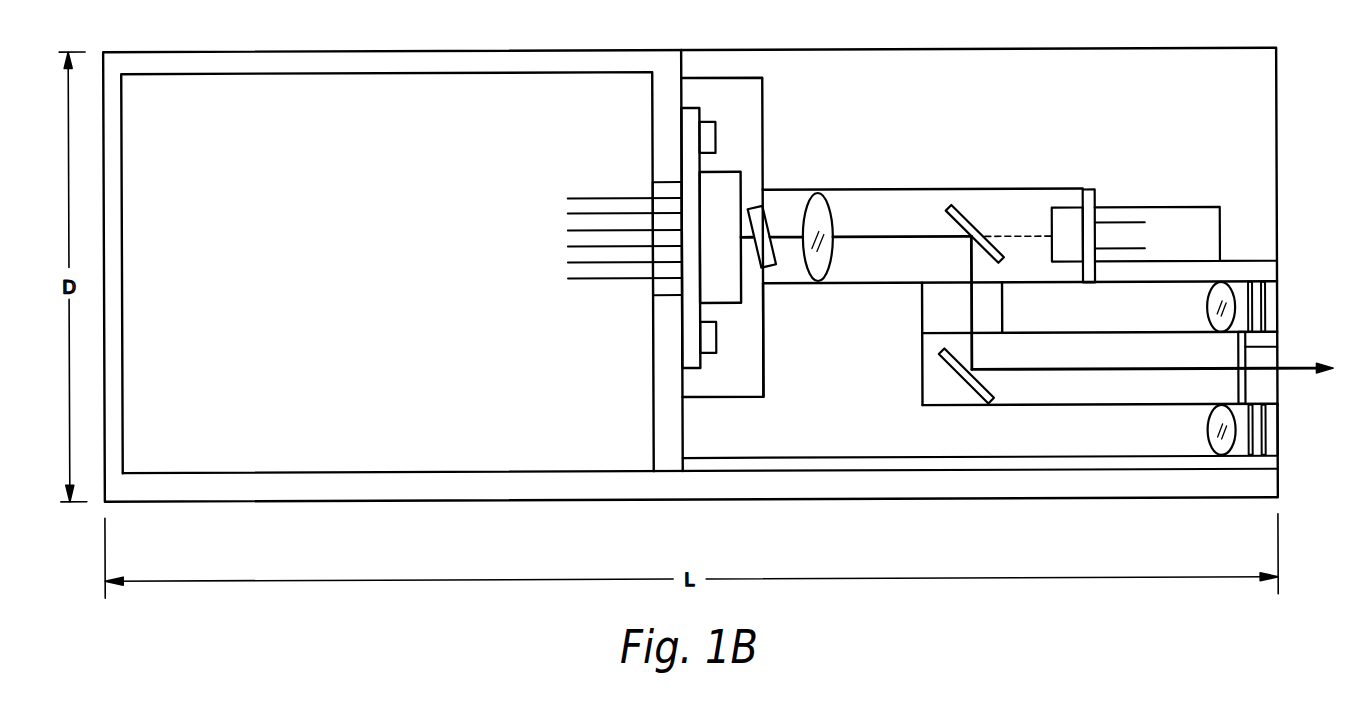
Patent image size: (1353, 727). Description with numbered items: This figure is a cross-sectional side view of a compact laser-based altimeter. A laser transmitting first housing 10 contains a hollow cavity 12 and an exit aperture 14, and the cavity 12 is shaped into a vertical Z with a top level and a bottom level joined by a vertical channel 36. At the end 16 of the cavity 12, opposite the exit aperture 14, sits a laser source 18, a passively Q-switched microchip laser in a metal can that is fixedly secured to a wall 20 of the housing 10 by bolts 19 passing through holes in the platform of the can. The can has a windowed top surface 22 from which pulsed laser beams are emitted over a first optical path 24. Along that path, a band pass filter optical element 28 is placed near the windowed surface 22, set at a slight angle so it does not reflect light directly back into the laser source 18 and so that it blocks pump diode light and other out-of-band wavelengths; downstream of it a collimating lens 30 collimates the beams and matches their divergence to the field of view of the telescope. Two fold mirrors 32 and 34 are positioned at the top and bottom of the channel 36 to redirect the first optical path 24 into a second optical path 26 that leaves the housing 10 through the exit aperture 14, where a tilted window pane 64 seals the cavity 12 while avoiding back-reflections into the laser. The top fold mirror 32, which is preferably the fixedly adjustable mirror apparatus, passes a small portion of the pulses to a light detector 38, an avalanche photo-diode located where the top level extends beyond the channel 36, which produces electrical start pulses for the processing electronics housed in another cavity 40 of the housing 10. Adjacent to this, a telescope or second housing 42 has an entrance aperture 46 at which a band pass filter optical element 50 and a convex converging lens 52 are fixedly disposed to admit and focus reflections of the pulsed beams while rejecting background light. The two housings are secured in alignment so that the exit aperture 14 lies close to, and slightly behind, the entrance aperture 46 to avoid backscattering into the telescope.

The first housing 10 is at (1183, 48).
The hollow cavity 12 is at (888, 277).
The exit aperture 14 is at (1270, 362).
The end of the cavity 16 is at (757, 300).
The laser source 18 is at (742, 178).
The bolts 19 is at (718, 139).
The wall of the first housing 20 is at (668, 433).
The windowed top surface 22 is at (743, 192).
The first optical path 24 is at (912, 234).
The second optical path 26 is at (1295, 373).
The band pass filter optical element 28 is at (765, 223).
The collimating lens 30 is at (833, 222).
The fold mirror 32 is at (968, 222).
The fold mirror 34 is at (965, 381).
The vertical channel 36 is at (1003, 312).
The light detector 38 is at (1097, 202).
The cavity 40 is at (333, 92).
The second housing 42 is at (1272, 273).
The entrance aperture 46 is at (1270, 439).
The band pass filter optical element 50 is at (1262, 416).
The converging lens 52 is at (1207, 431).
The window pane 64 is at (1279, 349).